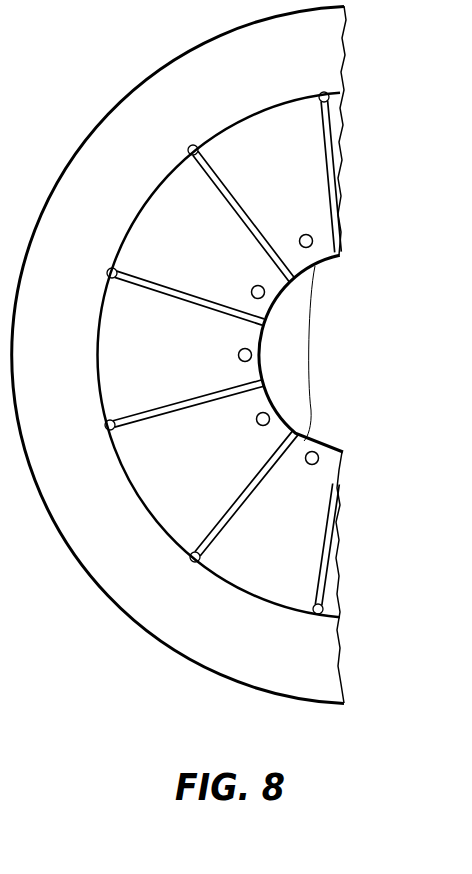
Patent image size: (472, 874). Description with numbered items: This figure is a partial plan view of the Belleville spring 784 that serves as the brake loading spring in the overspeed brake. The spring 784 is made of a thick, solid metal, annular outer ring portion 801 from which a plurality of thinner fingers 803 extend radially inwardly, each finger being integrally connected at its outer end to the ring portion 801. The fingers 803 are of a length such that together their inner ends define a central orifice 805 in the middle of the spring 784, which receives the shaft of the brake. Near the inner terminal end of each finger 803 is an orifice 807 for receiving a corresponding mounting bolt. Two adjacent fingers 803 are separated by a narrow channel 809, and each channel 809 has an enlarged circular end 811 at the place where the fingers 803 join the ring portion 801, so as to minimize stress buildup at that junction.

The Belleville spring 784 is at (147, 657).
The outer ring portion 801 is at (143, 77).
The fingers 803 is at (273, 403).
The central orifice 805 is at (356, 392).
The orifice 807 is at (305, 234).
The narrow channel 809 is at (162, 290).
The enlarged circular end 811 is at (198, 147).